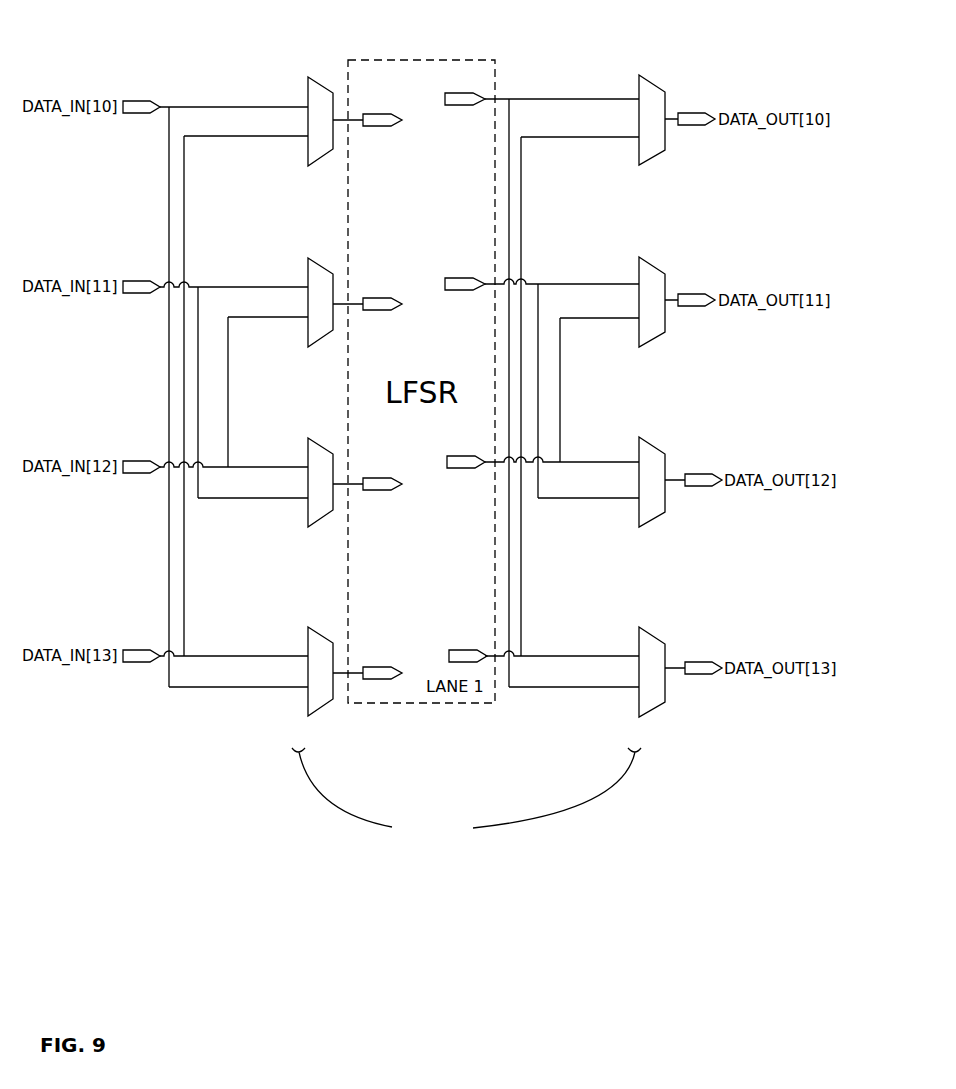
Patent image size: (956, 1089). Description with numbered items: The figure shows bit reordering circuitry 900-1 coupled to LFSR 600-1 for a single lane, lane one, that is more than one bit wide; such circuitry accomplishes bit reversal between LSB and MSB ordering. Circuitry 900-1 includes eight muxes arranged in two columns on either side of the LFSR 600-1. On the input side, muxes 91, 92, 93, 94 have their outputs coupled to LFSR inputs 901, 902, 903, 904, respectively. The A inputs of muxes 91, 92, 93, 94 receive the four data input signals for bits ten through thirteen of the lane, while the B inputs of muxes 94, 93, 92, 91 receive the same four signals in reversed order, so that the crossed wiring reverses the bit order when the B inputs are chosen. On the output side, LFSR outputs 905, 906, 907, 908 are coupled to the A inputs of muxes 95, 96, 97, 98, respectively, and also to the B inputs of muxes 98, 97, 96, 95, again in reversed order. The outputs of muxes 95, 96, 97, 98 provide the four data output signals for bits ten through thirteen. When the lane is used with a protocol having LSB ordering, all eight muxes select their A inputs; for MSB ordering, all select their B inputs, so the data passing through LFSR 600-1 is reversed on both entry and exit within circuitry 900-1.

The mux 91 is at (308, 77).
The mux 92 is at (308, 258).
The mux 93 is at (308, 438).
The mux 94 is at (308, 627).
The mux 95 is at (639, 75).
The mux 96 is at (639, 257).
The mux 97 is at (639, 437).
The mux 98 is at (639, 627).
The LFSR input 901 is at (380, 127).
The LFSR input 902 is at (380, 311).
The LFSR input 903 is at (380, 491).
The LFSR input 904 is at (375, 680).
The LFSR output 905 is at (456, 93).
The LFSR output 906 is at (456, 278).
The LFSR output 907 is at (462, 456).
The LFSR output 908 is at (468, 650).
The LFSR 600-1 is at (448, 605).
The bit reordering circuitry 900-1 is at (460, 838).